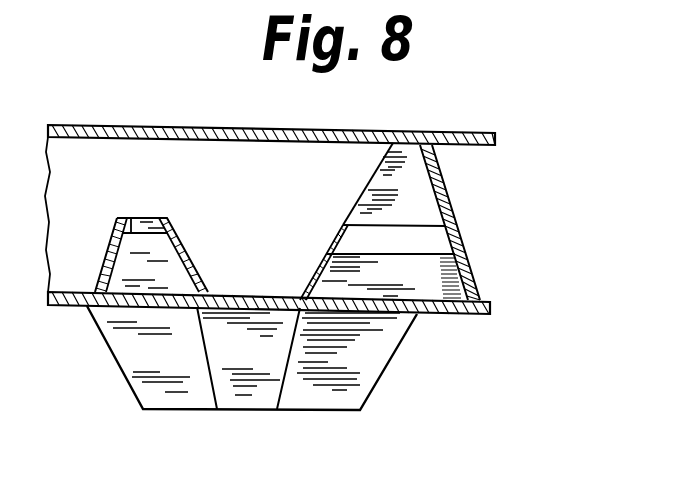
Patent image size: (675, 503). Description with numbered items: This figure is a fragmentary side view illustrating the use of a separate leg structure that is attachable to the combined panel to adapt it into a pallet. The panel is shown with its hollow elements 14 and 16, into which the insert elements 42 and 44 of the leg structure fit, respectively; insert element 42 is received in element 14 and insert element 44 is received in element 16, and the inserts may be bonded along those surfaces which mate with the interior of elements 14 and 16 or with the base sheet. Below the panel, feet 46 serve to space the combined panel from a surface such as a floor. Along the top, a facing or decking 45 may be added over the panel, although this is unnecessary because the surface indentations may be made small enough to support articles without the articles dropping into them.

The facing 45 is at (233, 126).
The element 14 is at (374, 181).
The element 16 is at (170, 220).
The insert element 44 is at (110, 263).
The insert element 42 is at (422, 290).
The feet 46 is at (313, 404).